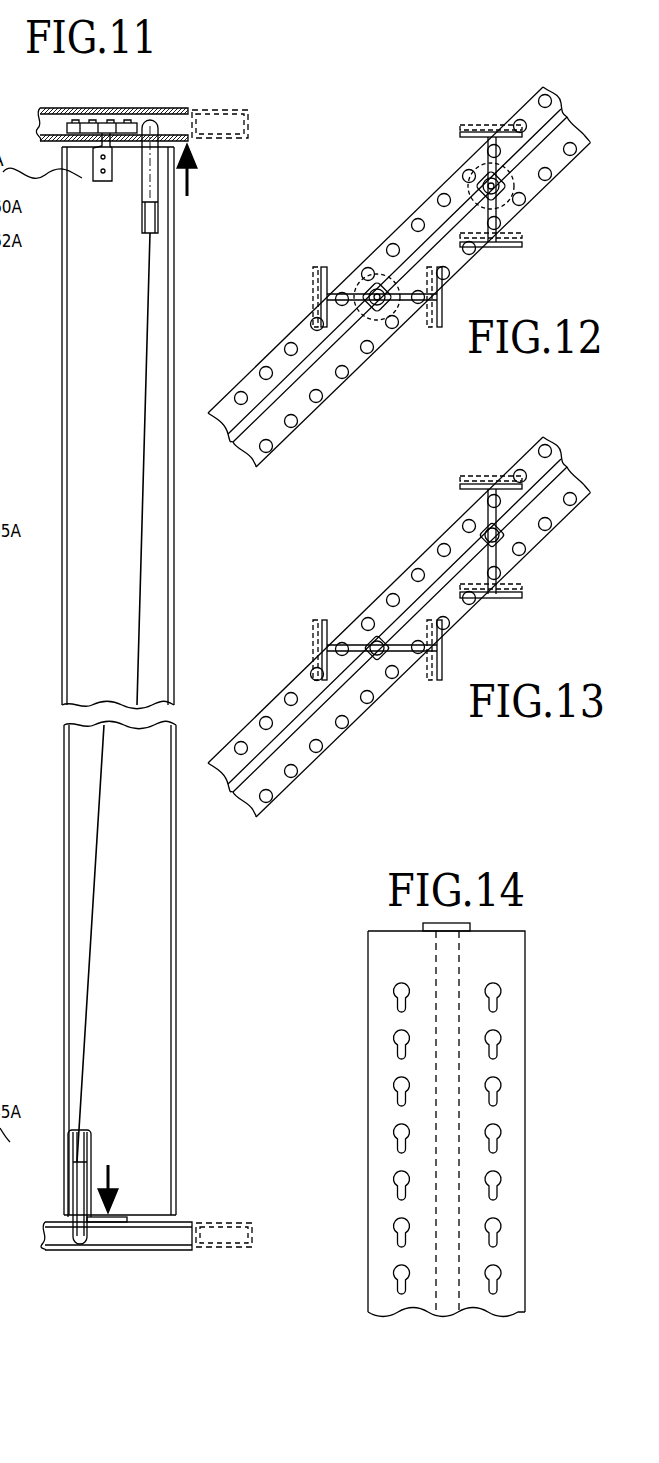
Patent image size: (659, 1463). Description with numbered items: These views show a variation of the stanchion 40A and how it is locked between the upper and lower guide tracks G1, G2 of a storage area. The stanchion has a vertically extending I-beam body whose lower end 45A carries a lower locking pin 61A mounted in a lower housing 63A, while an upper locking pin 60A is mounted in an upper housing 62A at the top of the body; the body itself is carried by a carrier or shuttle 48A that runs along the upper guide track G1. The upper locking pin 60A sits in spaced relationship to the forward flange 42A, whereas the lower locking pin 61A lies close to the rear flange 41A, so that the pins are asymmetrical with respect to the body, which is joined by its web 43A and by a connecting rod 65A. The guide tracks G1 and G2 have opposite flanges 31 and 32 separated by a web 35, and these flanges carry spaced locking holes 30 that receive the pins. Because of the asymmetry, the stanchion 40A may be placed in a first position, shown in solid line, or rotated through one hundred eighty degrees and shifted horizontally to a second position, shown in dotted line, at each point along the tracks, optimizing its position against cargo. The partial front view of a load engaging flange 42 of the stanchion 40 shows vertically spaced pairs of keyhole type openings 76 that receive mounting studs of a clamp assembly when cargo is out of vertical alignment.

In FIG. 11, the carrier or shuttle 48A is at (90, 110).
In FIG. 11, the upper guide track G1 is at (182, 109).
In FIG. 12, the upper guide track G1 is at (280, 348).
In FIG. 11, the upper locking pin 60A is at (140, 202).
In FIG. 11, the upper housing 62A is at (158, 223).
In FIG. 11, the rear flange 41A is at (62, 440).
In FIG. 11, the tie rod 65A is at (113, 697).
In FIG. 11, the stanchion 40A is at (186, 598).
In FIG. 12, the stanchion 40A is at (311, 273).
In FIG. 13, the stanchion 40A is at (474, 476).
In FIG. 11, the column web 43A is at (147, 920).
In FIG. 11, the forward flange 42A is at (176, 985).
In FIG. 11, the lower housing 63A is at (90, 1136).
In FIG. 11, the lower locking pin 61A is at (80, 1196).
In FIG. 11, the lower guide track G2 is at (222, 1216).
In FIG. 13, the lower guide track G2 is at (337, 733).
In FIG. 11, the lower end 45A is at (127, 1222).
In FIG. 12, the locking holes 30 is at (389, 291).
In FIG. 13, the locking holes 30 is at (396, 632).
In FIG. 12, the first flange 31 is at (223, 407).
In FIG. 13, the first flange 31 is at (223, 753).
In FIG. 12, the second flange 32 is at (253, 455).
In FIG. 13, the second flange 32 is at (282, 788).
In FIG. 12, the web 35 is at (236, 438).
In FIG. 13, the web 35 is at (237, 788).
In FIG. 14, the stanchion 40 is at (358, 1157).
In FIG. 14, the flange 42 is at (512, 1086).
In FIG. 14, the keyhole type openings 76 is at (396, 991).